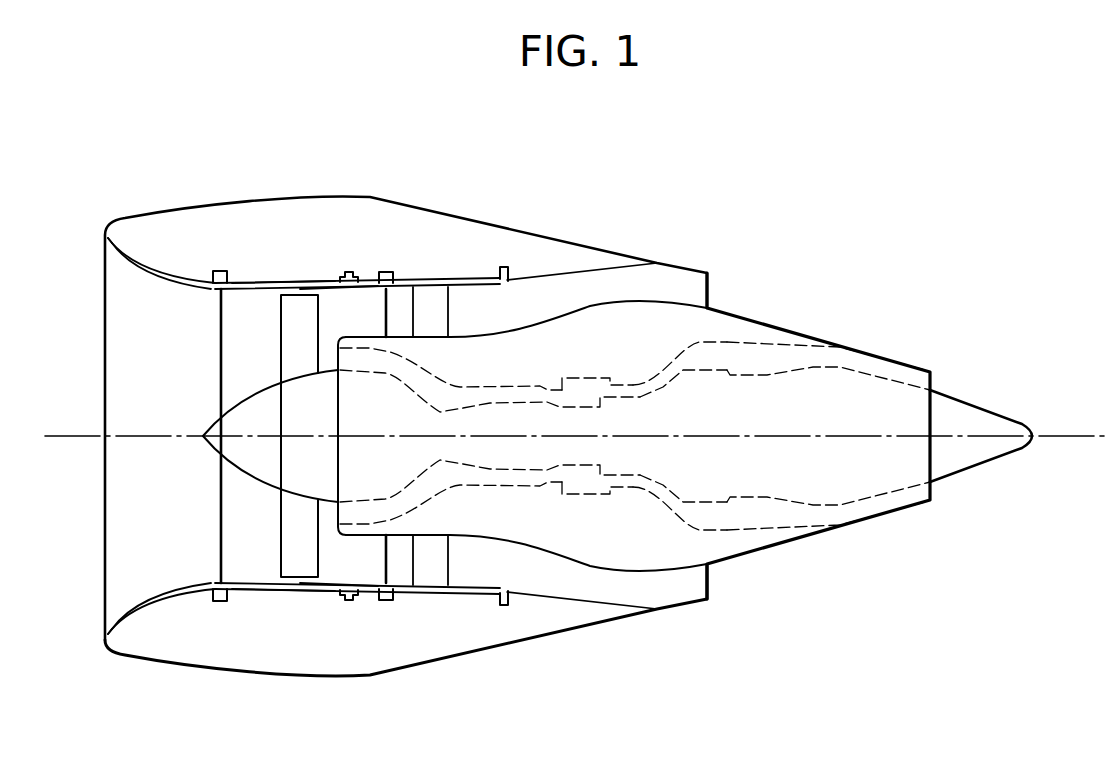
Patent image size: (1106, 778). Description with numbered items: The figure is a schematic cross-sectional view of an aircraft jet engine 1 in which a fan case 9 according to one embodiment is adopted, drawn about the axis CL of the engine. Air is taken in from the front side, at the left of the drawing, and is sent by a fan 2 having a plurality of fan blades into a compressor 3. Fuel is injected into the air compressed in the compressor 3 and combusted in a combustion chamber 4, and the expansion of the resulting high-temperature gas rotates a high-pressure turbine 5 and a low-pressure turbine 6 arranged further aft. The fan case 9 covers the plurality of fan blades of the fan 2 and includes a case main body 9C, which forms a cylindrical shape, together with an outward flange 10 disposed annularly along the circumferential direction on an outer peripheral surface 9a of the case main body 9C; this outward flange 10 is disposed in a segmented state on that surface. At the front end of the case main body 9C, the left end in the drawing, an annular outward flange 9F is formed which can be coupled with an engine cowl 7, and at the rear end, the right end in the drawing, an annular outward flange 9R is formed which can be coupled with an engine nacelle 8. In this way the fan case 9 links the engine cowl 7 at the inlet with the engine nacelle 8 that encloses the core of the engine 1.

The aircraft jet engine 1 is at (763, 243).
The fan 2 is at (266, 500).
The compressor 3 is at (458, 485).
The combustion chamber 4 is at (598, 487).
The high-pressure turbine 5 is at (660, 487).
The low-pressure turbine 6 is at (771, 505).
The engine cowl 7 is at (147, 267).
The engine nacelle 8 is at (469, 280).
The fan case 9 is at (303, 252).
The annular outward flange 9F is at (225, 272).
The case main body 9C is at (272, 281).
The outer peripheral surface 9a is at (333, 283).
The annular outward flange 9R is at (388, 266).
The outward flange 10 is at (353, 266).
The axis CL is at (1073, 435).